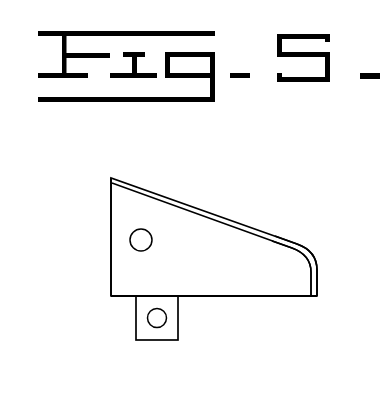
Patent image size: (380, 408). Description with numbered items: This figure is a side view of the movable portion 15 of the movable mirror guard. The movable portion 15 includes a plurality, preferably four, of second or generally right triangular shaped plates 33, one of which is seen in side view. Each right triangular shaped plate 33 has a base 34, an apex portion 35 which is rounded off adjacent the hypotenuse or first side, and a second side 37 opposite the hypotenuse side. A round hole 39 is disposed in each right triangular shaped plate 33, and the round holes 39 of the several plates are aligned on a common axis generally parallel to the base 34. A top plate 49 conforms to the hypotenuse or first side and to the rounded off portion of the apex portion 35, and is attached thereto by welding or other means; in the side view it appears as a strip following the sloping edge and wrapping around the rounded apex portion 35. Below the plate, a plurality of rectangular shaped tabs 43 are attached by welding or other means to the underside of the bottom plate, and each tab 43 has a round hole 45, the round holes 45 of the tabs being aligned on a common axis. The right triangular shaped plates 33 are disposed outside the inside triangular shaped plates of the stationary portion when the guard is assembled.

The movable portion 15 is at (222, 218).
The right triangular shaped plate 33 is at (178, 291).
The base 34 is at (110, 263).
The apex portion 35 is at (192, 213).
The second side 37 is at (258, 297).
The round hole 39 is at (142, 239).
The rectangular shaped tab 43 is at (152, 341).
The round hole 45 is at (148, 318).
The top plate 49 is at (278, 238).